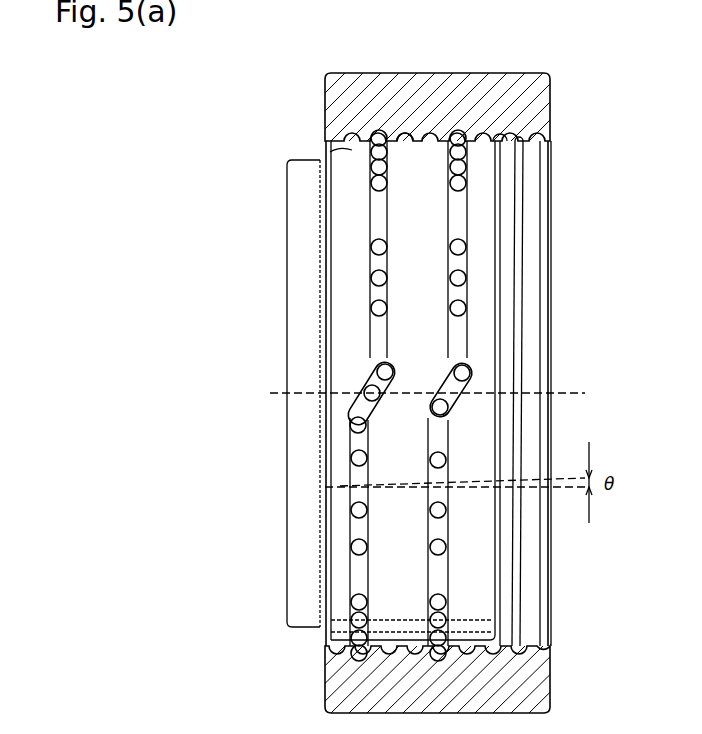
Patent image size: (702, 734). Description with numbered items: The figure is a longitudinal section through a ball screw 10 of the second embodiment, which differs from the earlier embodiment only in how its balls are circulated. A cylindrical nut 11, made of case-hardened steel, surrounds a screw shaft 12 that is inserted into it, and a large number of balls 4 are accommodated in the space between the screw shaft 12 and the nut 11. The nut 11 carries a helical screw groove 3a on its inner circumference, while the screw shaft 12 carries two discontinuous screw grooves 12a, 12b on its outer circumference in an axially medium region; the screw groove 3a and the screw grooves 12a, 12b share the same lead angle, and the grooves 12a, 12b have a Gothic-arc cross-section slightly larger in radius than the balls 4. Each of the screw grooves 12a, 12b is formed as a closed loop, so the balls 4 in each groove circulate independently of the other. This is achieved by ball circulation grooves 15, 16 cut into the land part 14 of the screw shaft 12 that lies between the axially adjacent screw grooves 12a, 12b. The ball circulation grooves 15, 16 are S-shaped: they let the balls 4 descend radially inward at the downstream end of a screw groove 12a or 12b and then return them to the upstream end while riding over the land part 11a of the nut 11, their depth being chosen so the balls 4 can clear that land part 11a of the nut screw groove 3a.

The ball screw 10 is at (265, 113).
The nut 11 is at (468, 95).
The land part of the nut 11a is at (405, 150).
The helical screw groove 3a is at (330, 150).
The balls 4 is at (375, 185).
The screw shaft 12 is at (346, 243).
The screw groove 12a is at (372, 333).
The screw groove 12b is at (462, 338).
The land part 14 is at (415, 262).
The ball circulation groove 15 is at (350, 408).
The ball circulation groove 16 is at (457, 400).